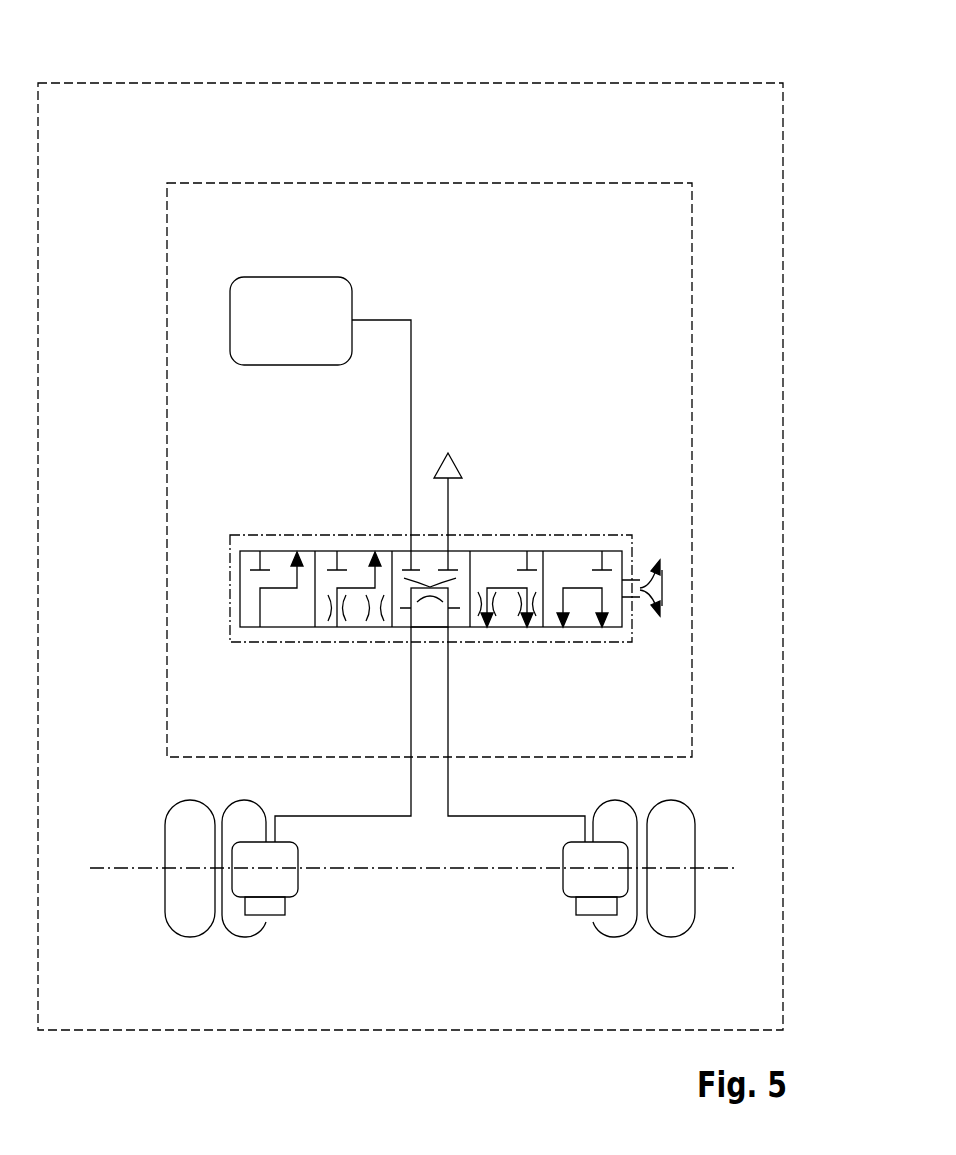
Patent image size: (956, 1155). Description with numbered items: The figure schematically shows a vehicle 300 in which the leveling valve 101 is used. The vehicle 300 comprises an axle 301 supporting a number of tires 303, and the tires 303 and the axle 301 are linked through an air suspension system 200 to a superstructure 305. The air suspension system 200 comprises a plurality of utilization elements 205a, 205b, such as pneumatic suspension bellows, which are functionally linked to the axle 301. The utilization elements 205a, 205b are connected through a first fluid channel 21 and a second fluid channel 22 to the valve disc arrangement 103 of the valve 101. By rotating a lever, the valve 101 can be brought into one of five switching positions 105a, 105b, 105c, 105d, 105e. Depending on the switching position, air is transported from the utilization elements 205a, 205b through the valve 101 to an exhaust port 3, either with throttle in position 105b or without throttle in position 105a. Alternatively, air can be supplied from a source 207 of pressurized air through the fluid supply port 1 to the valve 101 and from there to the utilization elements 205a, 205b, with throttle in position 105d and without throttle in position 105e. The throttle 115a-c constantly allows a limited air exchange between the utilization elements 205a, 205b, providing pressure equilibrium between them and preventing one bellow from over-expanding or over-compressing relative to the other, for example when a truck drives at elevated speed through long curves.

The vehicle 300 is at (697, 70).
The superstructure 305 is at (535, 170).
The air suspension system 200 is at (575, 396).
The source of pressurized air 207 is at (292, 277).
The fluid supply port 1 is at (411, 432).
The exhaust port 3 is at (450, 507).
The valve 101 is at (340, 548).
The valve disc arrangement 103 is at (277, 548).
The switching position without throttle (exhaust) 105a is at (279, 632).
The switching position with throttle (exhaust) 105b is at (353, 630).
The switching position 105c is at (432, 625).
The switching position with throttle (supply) 105d is at (510, 630).
The switching position without throttle (supply) 105e is at (585, 630).
The throttle 115a-c is at (431, 584).
The second fluid channel 22 is at (411, 787).
The first fluid channel 21 is at (448, 787).
The utilization element 205a is at (554, 884).
The utilization element 205b is at (307, 884).
The axle 301 is at (98, 866).
The tires 303 is at (191, 930).